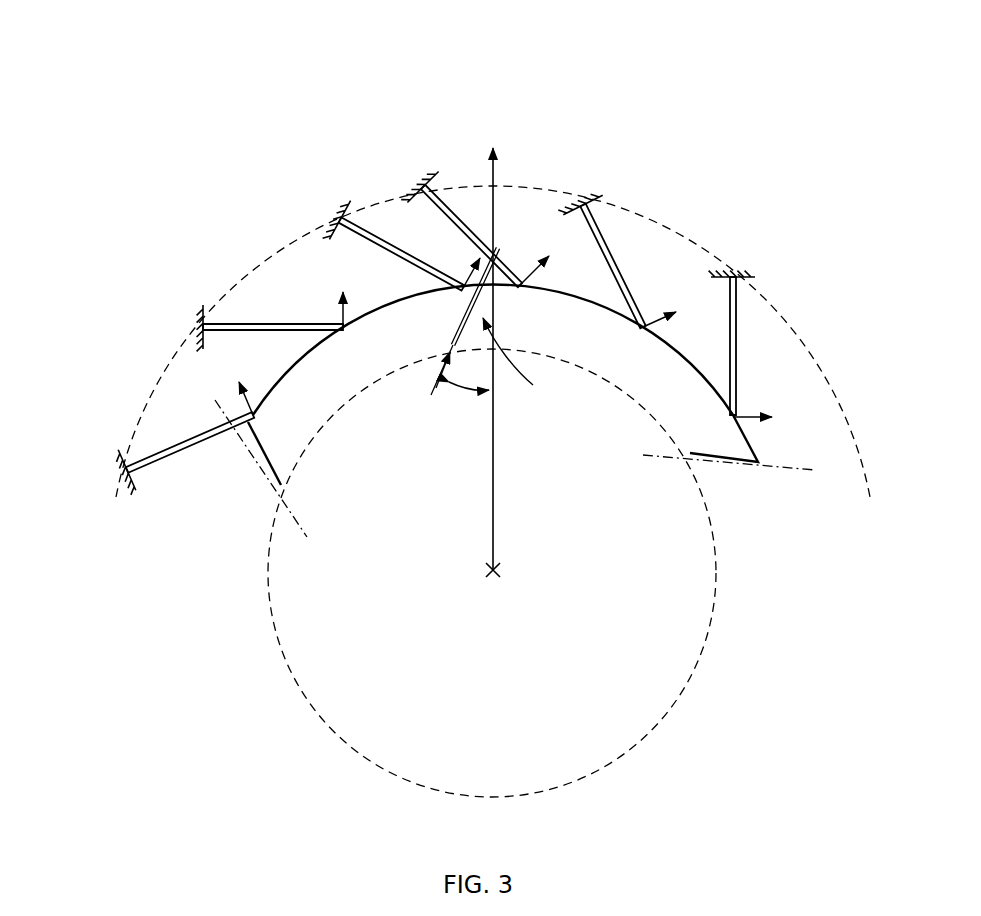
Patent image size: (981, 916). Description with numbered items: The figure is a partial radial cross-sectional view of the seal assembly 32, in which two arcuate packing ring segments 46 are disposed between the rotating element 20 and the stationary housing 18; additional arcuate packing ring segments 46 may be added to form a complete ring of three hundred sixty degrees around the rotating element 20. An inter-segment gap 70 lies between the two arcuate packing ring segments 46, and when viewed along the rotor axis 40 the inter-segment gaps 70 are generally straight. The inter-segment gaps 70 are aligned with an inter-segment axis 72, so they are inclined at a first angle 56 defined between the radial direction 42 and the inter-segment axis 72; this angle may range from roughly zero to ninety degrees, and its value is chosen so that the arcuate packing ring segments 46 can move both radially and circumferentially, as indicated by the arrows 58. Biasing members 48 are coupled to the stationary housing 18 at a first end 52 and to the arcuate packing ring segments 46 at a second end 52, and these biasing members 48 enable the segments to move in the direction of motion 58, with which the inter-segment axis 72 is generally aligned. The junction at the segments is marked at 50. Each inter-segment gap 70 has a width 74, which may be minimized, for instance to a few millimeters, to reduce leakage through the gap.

The stationary housing 18 is at (259, 267).
The rotating element 20 is at (316, 707).
The seal assembly 32 is at (785, 83).
The rotor axis 40 is at (487, 570).
The radial direction 42 is at (495, 512).
The arcuate packing ring segments 46 is at (272, 438).
The biasing members 48 is at (262, 324).
The pivot connection 50 is at (463, 289).
The first end 52 is at (200, 318).
The first angle 56 is at (465, 392).
The arrows 58 is at (352, 316).
The inter-segment gap 70 is at (523, 361).
The inter-segment axis 72 is at (436, 389).
The width 74 is at (450, 346).